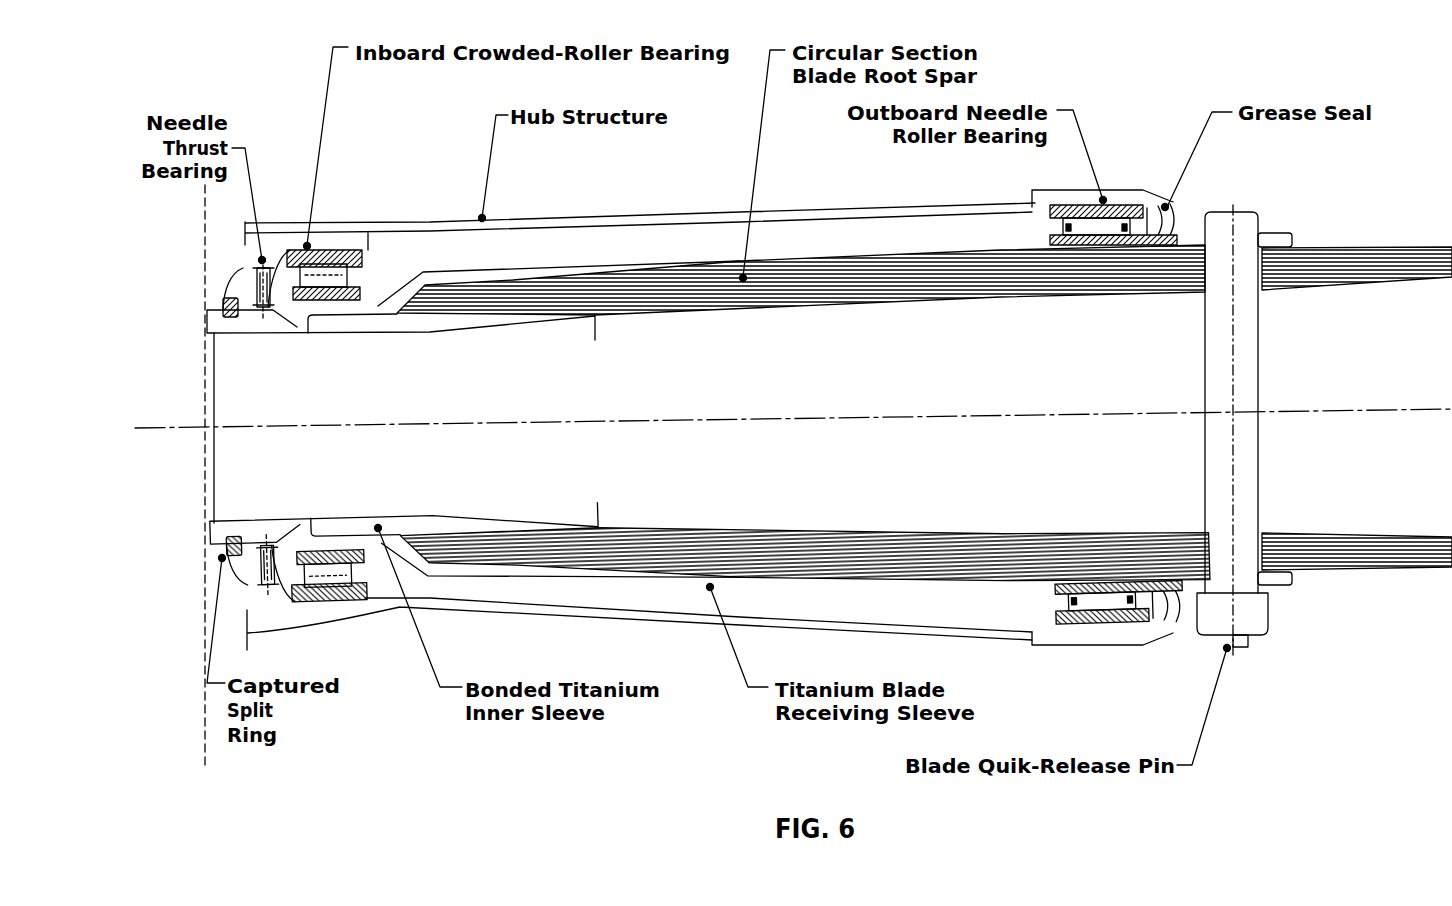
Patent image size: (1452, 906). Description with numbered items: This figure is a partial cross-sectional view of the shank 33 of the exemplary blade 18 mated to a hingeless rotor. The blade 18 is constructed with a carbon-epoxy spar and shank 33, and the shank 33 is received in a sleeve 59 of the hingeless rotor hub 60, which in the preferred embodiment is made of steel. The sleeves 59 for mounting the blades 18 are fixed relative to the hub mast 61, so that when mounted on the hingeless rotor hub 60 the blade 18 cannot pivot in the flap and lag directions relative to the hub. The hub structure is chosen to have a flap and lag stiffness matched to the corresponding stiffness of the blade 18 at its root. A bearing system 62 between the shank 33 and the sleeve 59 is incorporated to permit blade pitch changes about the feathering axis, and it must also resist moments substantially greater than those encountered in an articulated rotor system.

The blade 18 is at (1188, 258).
The shank 33 is at (1178, 212).
The sleeve 59 is at (548, 217).
The hingeless rotor hub 60 is at (640, 207).
The hub mast 61 is at (222, 558).
The bearing system 62 is at (308, 244).